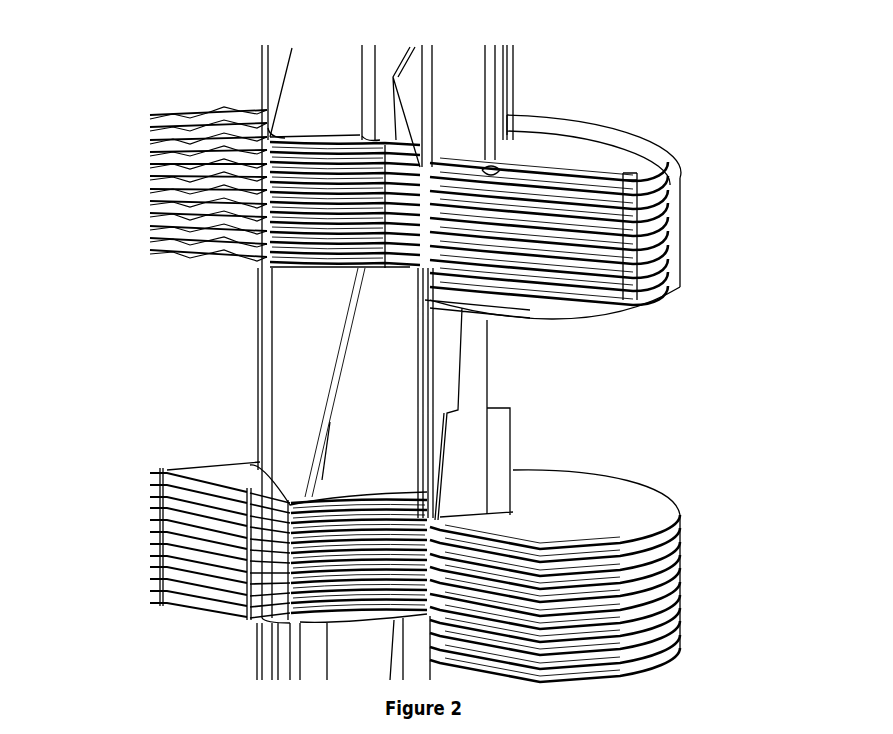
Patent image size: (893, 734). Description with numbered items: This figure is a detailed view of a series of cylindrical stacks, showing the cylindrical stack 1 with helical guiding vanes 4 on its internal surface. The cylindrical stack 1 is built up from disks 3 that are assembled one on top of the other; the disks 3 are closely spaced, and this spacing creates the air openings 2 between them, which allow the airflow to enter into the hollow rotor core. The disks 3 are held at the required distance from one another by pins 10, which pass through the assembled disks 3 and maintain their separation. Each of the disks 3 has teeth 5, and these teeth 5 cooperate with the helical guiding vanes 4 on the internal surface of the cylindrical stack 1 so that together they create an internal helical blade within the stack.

The cylindrical stack 1 is at (260, 312).
The air openings 2 is at (265, 198).
The disks 3 is at (672, 255).
The helical guiding vanes 4 is at (408, 98).
The teeth 5 is at (150, 562).
The pins 10 is at (668, 297).